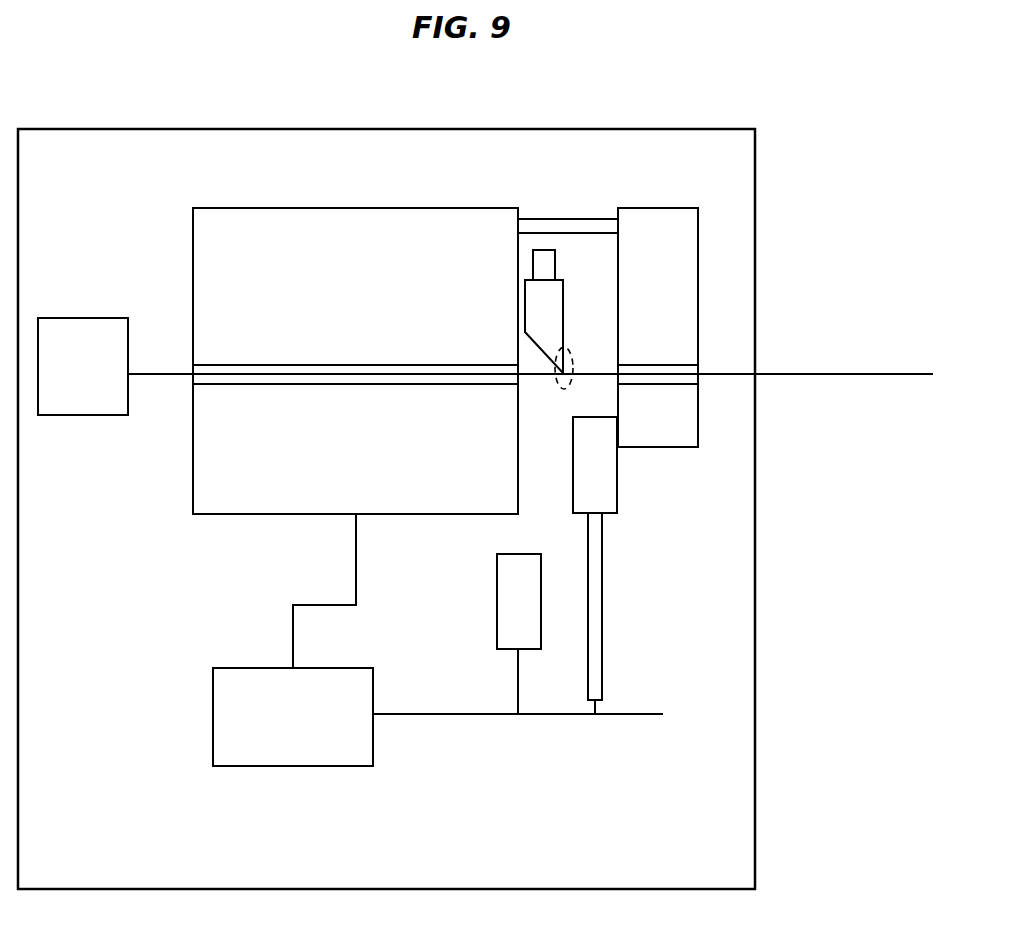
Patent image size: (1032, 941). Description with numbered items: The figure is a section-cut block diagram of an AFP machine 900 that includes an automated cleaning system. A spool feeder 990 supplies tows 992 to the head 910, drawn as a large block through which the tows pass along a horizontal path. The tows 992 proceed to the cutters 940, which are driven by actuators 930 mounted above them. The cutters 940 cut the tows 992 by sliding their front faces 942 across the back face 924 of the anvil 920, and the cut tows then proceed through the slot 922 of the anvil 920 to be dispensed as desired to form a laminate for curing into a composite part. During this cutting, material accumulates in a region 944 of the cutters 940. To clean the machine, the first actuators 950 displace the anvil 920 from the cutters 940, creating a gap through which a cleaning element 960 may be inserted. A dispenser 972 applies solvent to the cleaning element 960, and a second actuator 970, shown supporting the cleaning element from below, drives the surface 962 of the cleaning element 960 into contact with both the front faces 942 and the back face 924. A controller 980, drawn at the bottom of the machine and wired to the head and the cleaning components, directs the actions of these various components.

The AFP machine 900 is at (406, 869).
The head 910 is at (432, 207).
The anvil 920 is at (684, 293).
The slot 922 is at (698, 373).
The back face 924 is at (606, 327).
The actuators 930 is at (556, 266).
The cutters 940 is at (532, 305).
The front faces 942 is at (576, 312).
The region 944 is at (558, 384).
The first actuators 950 is at (560, 218).
The cleaning element 960 is at (608, 489).
The surface 962 is at (560, 493).
The second actuator 970 is at (602, 578).
The dispenser 972 is at (497, 602).
The controller 980 is at (275, 744).
The spool feeder 990 is at (90, 316).
The tows 992 is at (166, 370).